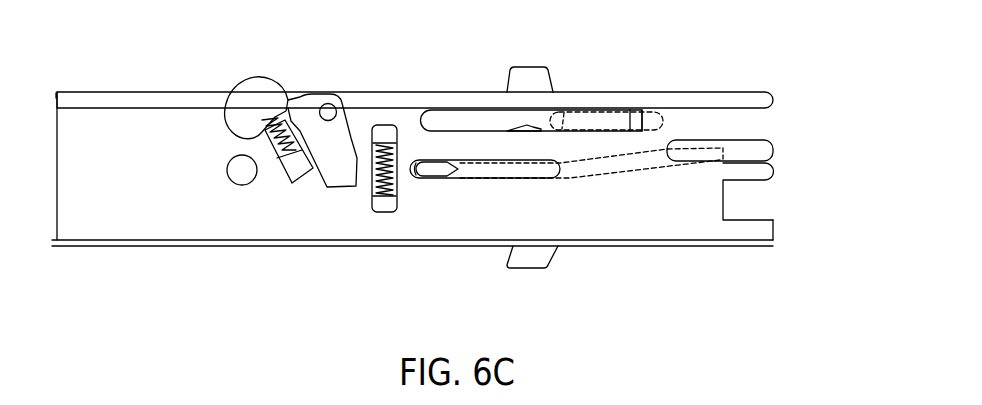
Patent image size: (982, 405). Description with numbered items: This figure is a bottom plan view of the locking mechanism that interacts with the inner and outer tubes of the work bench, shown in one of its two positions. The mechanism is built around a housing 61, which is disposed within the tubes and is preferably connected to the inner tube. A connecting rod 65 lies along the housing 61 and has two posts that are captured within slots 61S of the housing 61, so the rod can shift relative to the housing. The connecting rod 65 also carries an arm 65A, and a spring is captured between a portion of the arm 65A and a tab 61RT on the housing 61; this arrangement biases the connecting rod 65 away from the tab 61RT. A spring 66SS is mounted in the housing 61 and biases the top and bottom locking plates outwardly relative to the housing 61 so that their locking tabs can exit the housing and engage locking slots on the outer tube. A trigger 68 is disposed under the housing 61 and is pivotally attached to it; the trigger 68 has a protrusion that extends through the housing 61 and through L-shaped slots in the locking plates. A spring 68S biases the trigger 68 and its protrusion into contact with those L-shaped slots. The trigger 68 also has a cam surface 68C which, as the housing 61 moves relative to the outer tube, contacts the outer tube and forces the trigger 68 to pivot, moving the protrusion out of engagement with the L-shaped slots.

The housing 61 is at (697, 218).
The slots 61S is at (430, 175).
The tab 61RT is at (638, 108).
The connecting rod 65 is at (620, 172).
The arm 65A is at (586, 105).
The spring 66SS is at (385, 142).
The trigger 68 is at (274, 93).
The cam surface 68C is at (262, 80).
The spring 68S is at (285, 165).